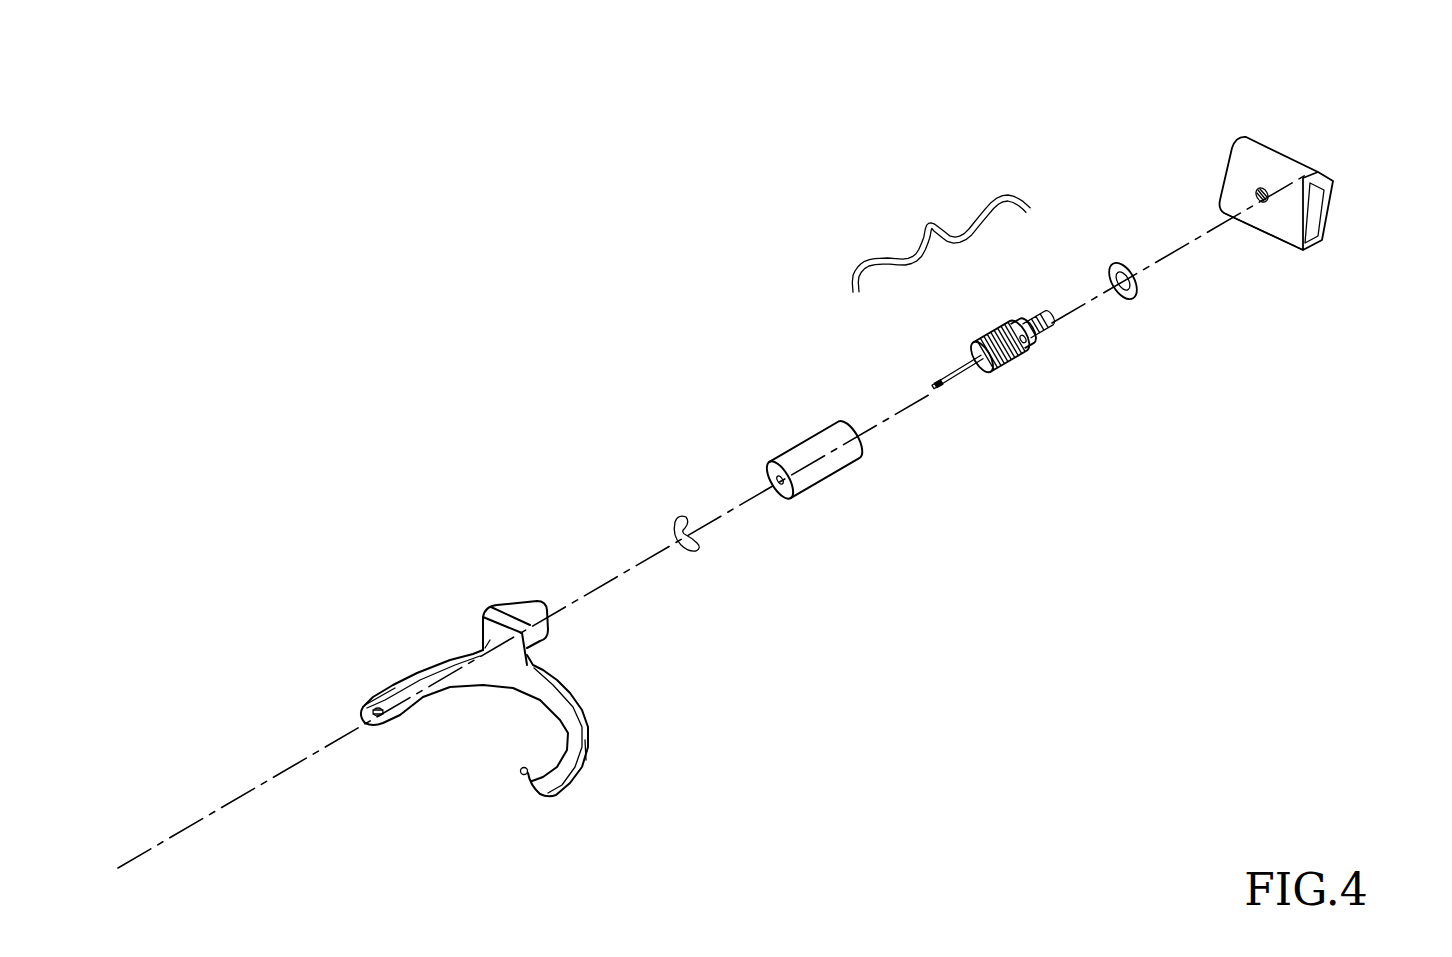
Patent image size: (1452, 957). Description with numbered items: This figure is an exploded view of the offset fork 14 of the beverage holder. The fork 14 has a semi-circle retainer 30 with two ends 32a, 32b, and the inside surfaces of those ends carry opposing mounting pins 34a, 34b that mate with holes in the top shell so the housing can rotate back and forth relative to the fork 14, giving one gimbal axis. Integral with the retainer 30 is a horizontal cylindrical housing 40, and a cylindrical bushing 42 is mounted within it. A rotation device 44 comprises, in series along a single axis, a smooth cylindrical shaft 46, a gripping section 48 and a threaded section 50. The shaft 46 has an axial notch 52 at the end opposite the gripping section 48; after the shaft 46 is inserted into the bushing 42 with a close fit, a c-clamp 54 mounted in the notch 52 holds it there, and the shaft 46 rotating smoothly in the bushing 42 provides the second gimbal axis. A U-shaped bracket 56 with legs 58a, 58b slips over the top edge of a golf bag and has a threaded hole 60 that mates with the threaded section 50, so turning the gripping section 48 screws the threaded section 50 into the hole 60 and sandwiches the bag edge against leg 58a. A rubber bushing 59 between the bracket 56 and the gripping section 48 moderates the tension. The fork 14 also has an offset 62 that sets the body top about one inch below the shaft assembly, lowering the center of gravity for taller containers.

The fork 14 is at (683, 185).
The semi-circle retainer 30 is at (553, 668).
The end 32a is at (380, 673).
The end 32b is at (583, 775).
The mounting pin 34a is at (385, 714).
The mounting pin 34b is at (520, 771).
The cylindrical housing 40 is at (525, 603).
The cylindrical bushing 42 is at (805, 445).
The rotation device 44 is at (928, 230).
The smooth cylindrical shaft 46 is at (958, 385).
The gripping section 48 is at (1012, 372).
The threaded section 50 is at (1036, 322).
The axial notch 52 is at (940, 392).
The c-clamp 54 is at (672, 522).
The U-shaped bracket 56 is at (1243, 137).
The bracket leg 58a is at (1332, 210).
The bracket leg 58b is at (1275, 237).
The rubber bushing 59 is at (1135, 295).
The threaded hole 60 is at (1250, 197).
The offset 62 is at (485, 632).